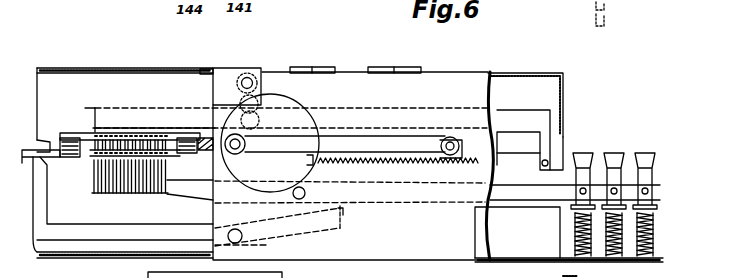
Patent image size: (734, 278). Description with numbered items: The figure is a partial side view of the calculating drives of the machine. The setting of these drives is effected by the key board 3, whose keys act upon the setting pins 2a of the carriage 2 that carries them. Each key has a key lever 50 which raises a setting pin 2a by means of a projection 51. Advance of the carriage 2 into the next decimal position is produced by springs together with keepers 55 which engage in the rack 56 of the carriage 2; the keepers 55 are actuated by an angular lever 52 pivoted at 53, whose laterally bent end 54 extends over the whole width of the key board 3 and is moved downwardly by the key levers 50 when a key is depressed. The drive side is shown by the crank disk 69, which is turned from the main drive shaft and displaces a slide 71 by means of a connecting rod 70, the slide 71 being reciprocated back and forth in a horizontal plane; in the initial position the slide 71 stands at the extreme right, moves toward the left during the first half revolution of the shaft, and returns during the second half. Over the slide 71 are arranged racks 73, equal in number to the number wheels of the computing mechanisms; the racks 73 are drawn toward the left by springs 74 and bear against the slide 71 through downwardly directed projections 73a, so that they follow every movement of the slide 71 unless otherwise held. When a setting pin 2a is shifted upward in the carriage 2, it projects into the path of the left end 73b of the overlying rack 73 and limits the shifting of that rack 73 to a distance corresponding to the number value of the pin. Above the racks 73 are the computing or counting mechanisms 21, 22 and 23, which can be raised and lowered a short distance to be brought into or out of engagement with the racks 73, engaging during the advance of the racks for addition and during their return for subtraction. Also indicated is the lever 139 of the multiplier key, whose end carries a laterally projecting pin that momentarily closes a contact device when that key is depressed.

The carriage 2 is at (87, 138).
The setting pins 2a is at (96, 130).
The key board 3 is at (585, 152).
The computing mechanism 21 is at (400, 67).
The computing mechanism 22 is at (319, 67).
The computing mechanism 23 is at (229, 79).
The key levers 50 is at (187, 192).
The projections 51 is at (92, 176).
The angular lever 52 is at (40, 232).
The pivot 53 is at (242, 238).
The laterally bent end 54 is at (346, 218).
The keepers 55 is at (24, 150).
The rack 56 is at (76, 160).
The crank disk 69 is at (284, 104).
The connecting rod 70 is at (335, 144).
The slide 71 is at (462, 160).
The racks 73 is at (523, 140).
The downwardly directed projections 73a is at (565, 137).
The left end 73b is at (96, 116).
The springs 74 is at (416, 165).
The lever 139 is at (594, 12).